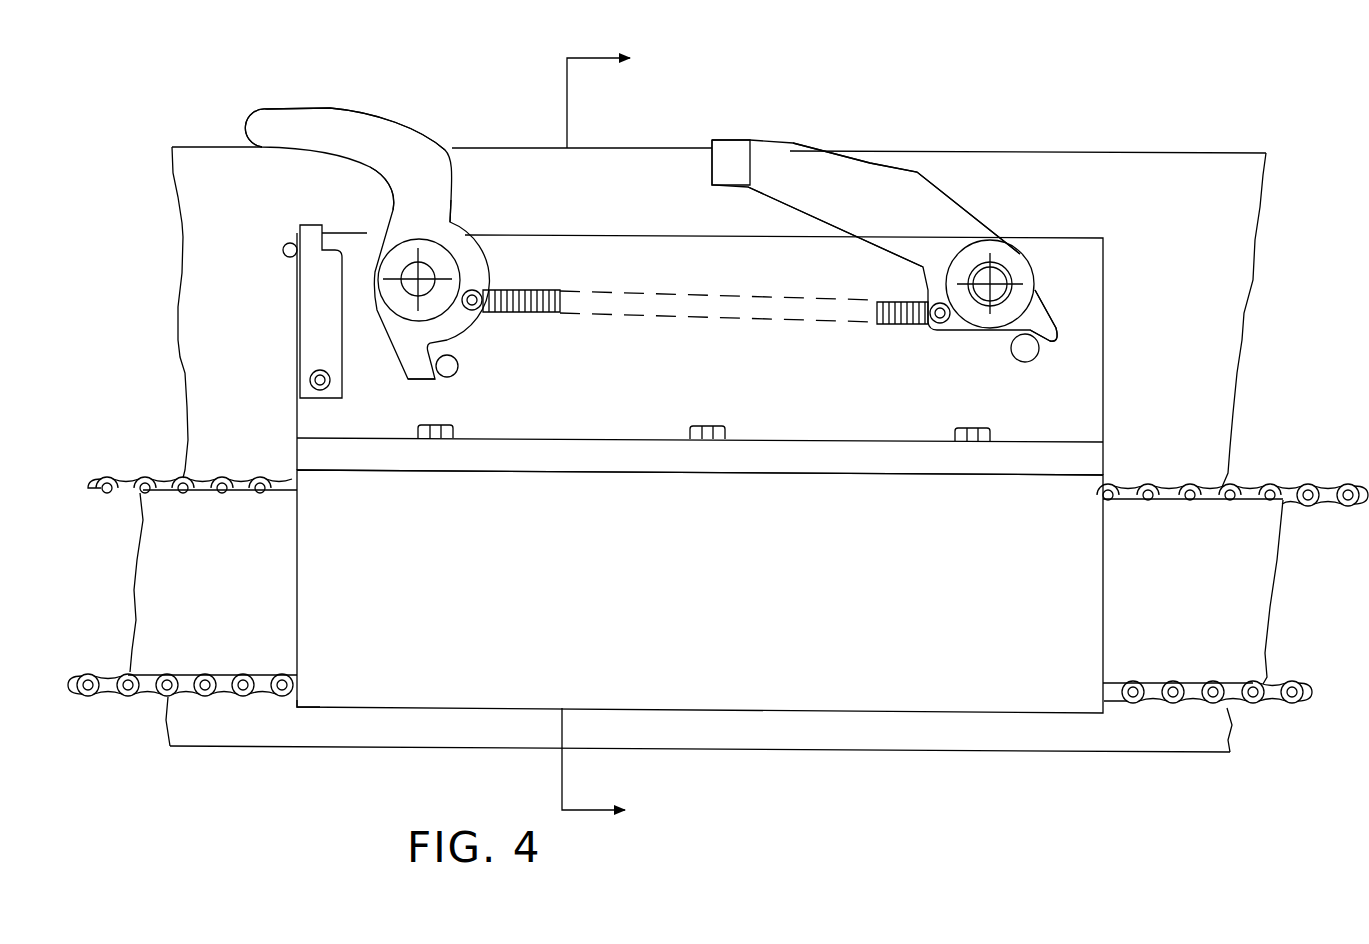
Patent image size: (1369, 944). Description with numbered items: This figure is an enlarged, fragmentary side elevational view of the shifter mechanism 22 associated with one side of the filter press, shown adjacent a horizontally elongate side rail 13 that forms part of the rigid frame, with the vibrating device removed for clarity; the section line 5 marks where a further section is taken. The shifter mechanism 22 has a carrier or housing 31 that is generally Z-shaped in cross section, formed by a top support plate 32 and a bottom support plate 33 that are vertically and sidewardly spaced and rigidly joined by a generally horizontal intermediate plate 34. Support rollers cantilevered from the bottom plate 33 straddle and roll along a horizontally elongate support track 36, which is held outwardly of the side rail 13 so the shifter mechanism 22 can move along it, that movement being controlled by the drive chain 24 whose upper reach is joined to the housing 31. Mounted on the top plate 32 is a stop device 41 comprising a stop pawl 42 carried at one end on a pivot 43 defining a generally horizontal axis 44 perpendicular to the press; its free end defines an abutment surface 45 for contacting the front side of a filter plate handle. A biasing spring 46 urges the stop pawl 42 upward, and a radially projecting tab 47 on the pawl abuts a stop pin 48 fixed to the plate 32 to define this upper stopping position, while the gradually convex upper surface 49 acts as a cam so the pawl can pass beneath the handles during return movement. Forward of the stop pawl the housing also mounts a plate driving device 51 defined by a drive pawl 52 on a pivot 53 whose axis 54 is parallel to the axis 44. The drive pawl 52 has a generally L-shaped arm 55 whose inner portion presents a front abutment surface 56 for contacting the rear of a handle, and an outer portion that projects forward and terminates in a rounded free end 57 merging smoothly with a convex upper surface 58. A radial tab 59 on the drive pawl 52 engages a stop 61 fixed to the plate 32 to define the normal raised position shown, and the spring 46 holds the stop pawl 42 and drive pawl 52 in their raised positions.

The section line 5- 5 is at (597, 437).
The side rail 13 is at (1227, 190).
The shifter mechanism 22 is at (917, 760).
The drive chain 24 is at (1337, 484).
The shifter housing 31 is at (312, 708).
The top support plate 32 is at (1103, 368).
The bottom support plate 33 is at (815, 690).
The intermediate plate 34 is at (1106, 455).
The support track 36 is at (1273, 588).
The stop device 41 is at (940, 182).
The stop pawl 42 is at (890, 188).
The pivot 43 is at (993, 281).
The axis 44 is at (997, 272).
The abutment surface 45 is at (712, 160).
The biasing spring 46 is at (878, 318).
The tab 47 is at (1050, 320).
The stop pin 48 is at (1018, 355).
The upper surface 49 is at (870, 156).
The plate driving device 51 is at (412, 118).
The drive pawl 52 is at (316, 110).
The pivot 53 is at (413, 265).
The axis 54 is at (412, 270).
The L-shaped arm 55 is at (420, 142).
The abutment surface 56 is at (452, 183).
The rounded free end 57 is at (248, 122).
The upper surface 58 is at (365, 112).
The tab 59 is at (408, 379).
The stop 61 is at (458, 366).